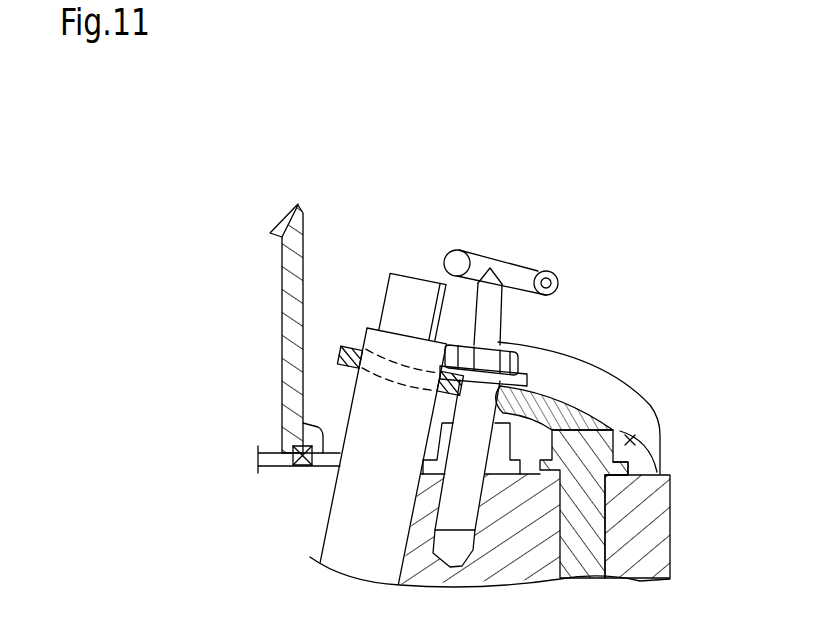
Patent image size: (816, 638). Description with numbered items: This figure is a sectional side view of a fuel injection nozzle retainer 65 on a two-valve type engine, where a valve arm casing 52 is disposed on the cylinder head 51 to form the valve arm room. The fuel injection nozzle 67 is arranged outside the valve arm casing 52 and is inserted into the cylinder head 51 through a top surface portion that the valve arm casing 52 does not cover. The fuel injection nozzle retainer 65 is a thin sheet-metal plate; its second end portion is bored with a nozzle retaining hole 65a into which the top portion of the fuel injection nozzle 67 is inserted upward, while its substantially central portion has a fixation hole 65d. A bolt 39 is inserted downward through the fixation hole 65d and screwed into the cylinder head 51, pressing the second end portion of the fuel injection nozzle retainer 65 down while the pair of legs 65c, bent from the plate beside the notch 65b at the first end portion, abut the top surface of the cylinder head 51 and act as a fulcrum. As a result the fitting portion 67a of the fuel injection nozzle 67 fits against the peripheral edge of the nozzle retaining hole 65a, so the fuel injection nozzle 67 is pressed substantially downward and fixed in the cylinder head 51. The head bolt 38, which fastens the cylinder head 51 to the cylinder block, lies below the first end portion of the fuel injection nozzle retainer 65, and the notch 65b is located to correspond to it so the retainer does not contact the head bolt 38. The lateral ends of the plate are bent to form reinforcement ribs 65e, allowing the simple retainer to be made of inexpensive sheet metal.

The head bolt 38 is at (587, 523).
The bolt 39 is at (503, 345).
The cylinder head 51 is at (672, 562).
The valve arm casing 52 is at (303, 247).
The fuel injection nozzle retainer 65 is at (610, 374).
The nozzle retaining hole 65a is at (365, 352).
The notch 65b is at (633, 441).
The leg 65c is at (657, 470).
The fixation hole 65d is at (552, 400).
The reinforcement rib 65e is at (637, 410).
The fuel injection nozzle 67 is at (412, 290).
The fitting portion 67a is at (345, 385).